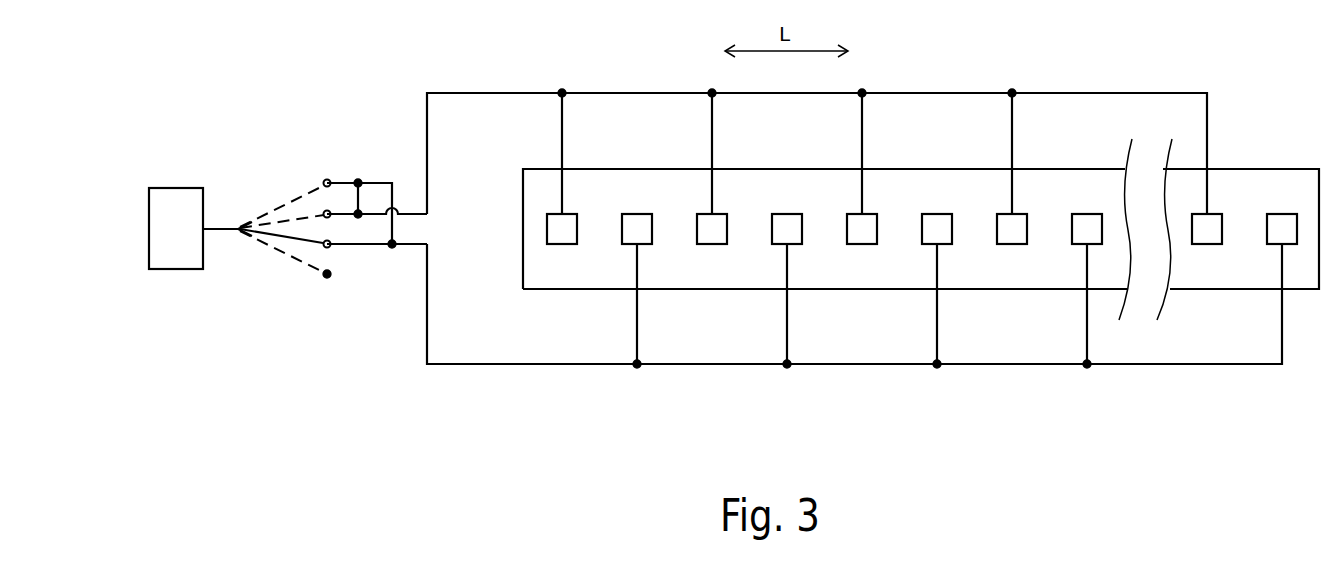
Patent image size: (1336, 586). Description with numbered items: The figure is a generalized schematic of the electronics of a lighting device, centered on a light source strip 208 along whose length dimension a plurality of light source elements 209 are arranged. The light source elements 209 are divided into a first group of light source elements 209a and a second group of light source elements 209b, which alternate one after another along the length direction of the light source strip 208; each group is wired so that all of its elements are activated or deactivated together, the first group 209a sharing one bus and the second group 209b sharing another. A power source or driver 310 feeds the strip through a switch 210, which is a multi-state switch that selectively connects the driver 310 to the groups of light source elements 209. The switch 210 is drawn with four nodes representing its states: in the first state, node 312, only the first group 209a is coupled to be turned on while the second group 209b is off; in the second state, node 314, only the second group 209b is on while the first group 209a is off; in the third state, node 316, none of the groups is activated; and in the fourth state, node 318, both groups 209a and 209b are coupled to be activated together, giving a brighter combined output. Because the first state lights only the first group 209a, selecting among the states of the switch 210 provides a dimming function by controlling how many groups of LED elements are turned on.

The light source strip 208 is at (1113, 417).
The light source elements 209 is at (508, 185).
The first group of light source elements 209a is at (884, 247).
The second group of light source elements 209b is at (959, 212).
The switch 210 is at (265, 293).
The power source or driver 310 is at (178, 188).
The node representing first state 312 is at (325, 212).
The node representing second state 314 is at (330, 248).
The node representing third state 316 is at (327, 278).
The node representing fourth state 318 is at (328, 180).